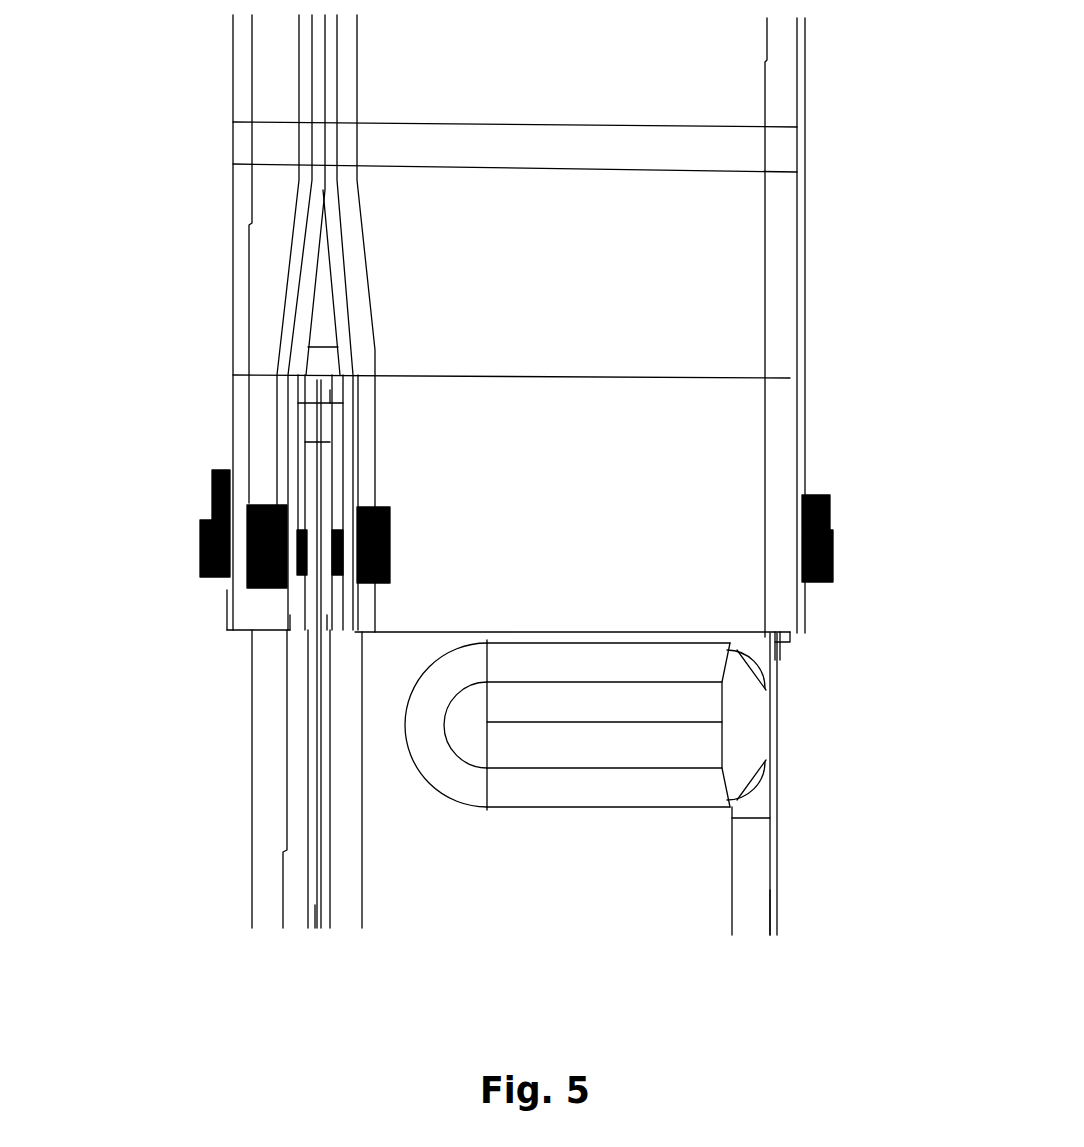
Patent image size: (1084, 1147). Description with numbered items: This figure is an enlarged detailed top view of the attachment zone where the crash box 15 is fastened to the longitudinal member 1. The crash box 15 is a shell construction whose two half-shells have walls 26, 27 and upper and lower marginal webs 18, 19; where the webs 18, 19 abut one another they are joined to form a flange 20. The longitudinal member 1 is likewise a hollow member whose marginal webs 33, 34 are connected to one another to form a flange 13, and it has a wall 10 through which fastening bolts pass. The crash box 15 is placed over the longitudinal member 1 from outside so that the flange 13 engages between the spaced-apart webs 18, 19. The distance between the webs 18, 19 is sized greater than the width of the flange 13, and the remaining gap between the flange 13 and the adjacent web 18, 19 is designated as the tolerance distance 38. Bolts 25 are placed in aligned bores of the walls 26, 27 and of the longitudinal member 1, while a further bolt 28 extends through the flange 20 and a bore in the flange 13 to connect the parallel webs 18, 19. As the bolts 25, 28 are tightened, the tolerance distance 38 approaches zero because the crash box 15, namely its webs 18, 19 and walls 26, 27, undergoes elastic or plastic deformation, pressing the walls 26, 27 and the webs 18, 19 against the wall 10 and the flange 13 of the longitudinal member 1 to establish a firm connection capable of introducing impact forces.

The longitudinal member 1 is at (778, 898).
The wall 10 is at (250, 716).
The flange 13 is at (308, 828).
The crash box 15 is at (808, 243).
The marginal web 18 is at (347, 418).
The marginal web 19 is at (290, 445).
The flange 20 is at (301, 73).
The bolt 25 is at (207, 485).
The wall 26 is at (232, 594).
The wall 27 is at (803, 620).
The bolt 28 is at (240, 533).
The marginal web 33 is at (323, 912).
The marginal web 34 is at (307, 912).
The tolerance distance 38 is at (327, 620).